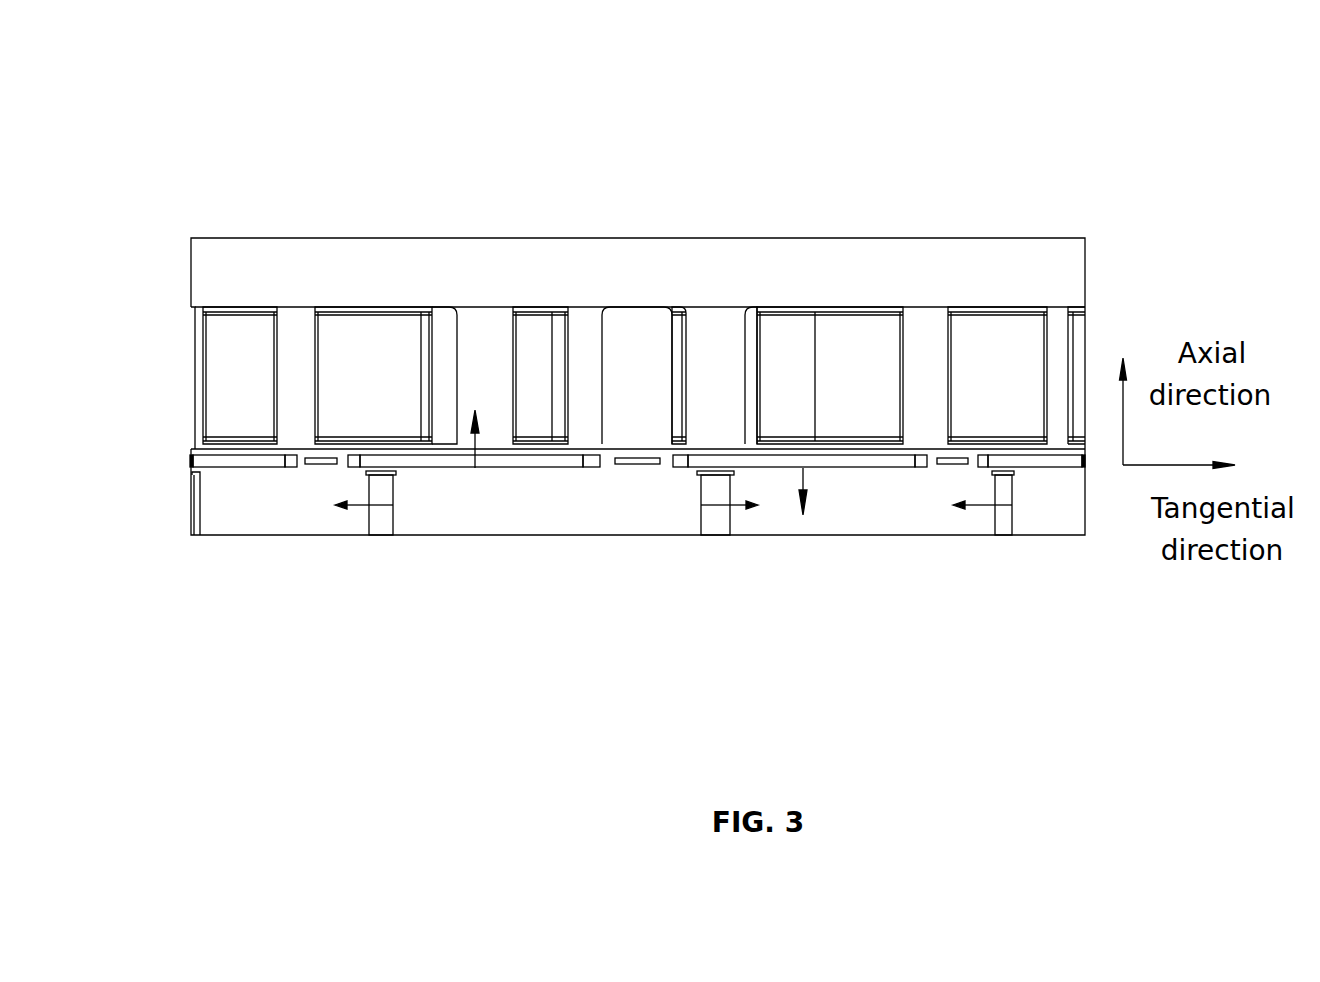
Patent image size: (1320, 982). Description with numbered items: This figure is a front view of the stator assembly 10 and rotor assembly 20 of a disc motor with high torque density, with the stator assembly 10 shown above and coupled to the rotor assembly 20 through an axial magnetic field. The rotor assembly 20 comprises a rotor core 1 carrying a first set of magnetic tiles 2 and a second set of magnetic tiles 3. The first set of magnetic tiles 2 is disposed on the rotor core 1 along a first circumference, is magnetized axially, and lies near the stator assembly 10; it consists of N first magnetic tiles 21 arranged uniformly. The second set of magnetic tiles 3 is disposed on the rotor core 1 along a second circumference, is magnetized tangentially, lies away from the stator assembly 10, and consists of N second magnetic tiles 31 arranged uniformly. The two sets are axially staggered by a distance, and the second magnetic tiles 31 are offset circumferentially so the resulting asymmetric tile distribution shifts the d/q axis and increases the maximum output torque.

The rotor core 1 is at (260, 508).
The stator assembly 10 is at (303, 275).
The first set of magnetic tiles 2 is at (637, 277).
The rotor assembly 20 is at (160, 483).
The first magnetic tile 21 is at (1037, 462).
The second set of magnetic tiles 3 is at (690, 576).
The second magnetic tile 31 is at (1000, 518).